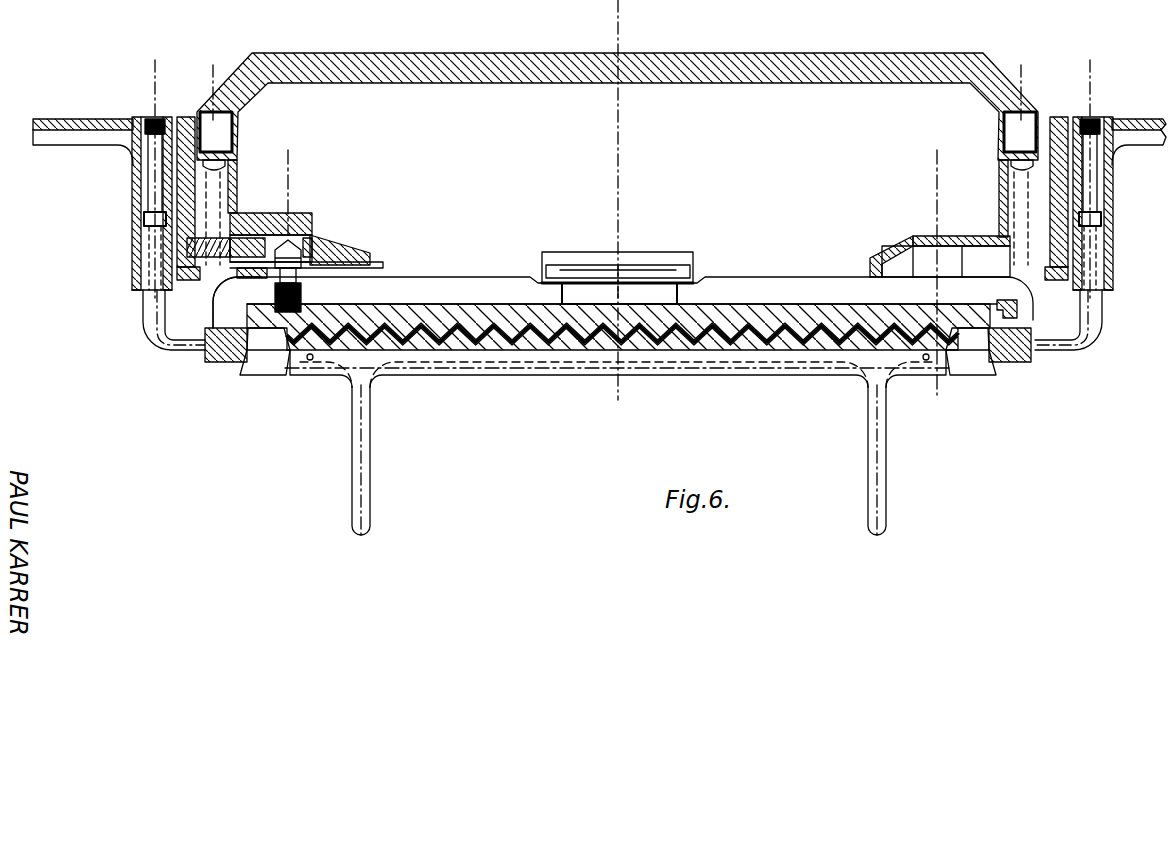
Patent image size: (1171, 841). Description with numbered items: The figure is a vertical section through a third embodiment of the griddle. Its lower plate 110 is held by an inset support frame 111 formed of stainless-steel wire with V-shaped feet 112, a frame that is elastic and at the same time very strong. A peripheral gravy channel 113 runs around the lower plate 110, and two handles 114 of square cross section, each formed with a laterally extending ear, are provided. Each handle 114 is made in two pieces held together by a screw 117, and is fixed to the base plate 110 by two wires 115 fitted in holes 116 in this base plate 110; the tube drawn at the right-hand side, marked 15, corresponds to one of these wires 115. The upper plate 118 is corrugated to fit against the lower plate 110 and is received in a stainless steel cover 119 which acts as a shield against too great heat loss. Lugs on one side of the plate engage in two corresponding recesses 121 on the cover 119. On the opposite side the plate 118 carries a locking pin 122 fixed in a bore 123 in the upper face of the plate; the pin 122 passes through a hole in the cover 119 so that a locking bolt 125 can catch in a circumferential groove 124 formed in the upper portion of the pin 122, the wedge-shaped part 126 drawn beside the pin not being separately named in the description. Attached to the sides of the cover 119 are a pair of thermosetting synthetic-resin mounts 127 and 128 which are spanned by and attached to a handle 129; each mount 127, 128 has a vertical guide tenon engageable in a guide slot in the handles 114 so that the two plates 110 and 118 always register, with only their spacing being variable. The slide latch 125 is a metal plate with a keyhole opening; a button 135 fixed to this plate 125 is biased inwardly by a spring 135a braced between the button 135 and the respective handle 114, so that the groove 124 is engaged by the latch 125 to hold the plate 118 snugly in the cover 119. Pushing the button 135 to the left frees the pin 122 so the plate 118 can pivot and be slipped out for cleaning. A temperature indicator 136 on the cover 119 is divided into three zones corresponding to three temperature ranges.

The lower plate 110 is at (782, 352).
The inset support frame 111 is at (636, 378).
The V-shaped feet 112 is at (362, 468).
The peripheral gravy channel 113 is at (265, 365).
The handle 114 is at (96, 118).
The wire 115 is at (147, 326).
The bent tube 15 is at (1050, 340).
The hole 116 is at (208, 352).
The screw 117 is at (157, 195).
The upper plate 118 is at (732, 318).
The cover 119 is at (462, 280).
The recess 121 is at (1018, 308).
The locking pin 122 is at (303, 296).
The bore 123 is at (245, 296).
The circumferential groove 124 is at (300, 245).
The slide latch 125 is at (285, 233).
The wedge washer 126 is at (365, 262).
The synthetic-resin mount 127 is at (226, 137).
The synthetic-resin mount 128 is at (1008, 135).
The handle 129 is at (585, 72).
The button 135 is at (255, 213).
The spring 135a is at (186, 258).
The temperature indicator 136 is at (602, 252).